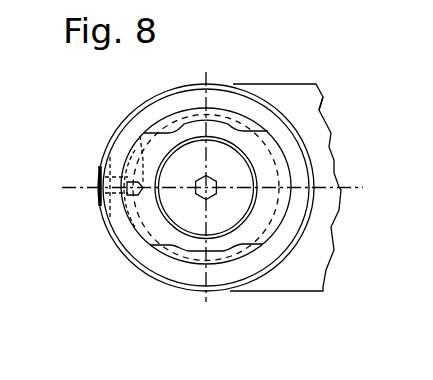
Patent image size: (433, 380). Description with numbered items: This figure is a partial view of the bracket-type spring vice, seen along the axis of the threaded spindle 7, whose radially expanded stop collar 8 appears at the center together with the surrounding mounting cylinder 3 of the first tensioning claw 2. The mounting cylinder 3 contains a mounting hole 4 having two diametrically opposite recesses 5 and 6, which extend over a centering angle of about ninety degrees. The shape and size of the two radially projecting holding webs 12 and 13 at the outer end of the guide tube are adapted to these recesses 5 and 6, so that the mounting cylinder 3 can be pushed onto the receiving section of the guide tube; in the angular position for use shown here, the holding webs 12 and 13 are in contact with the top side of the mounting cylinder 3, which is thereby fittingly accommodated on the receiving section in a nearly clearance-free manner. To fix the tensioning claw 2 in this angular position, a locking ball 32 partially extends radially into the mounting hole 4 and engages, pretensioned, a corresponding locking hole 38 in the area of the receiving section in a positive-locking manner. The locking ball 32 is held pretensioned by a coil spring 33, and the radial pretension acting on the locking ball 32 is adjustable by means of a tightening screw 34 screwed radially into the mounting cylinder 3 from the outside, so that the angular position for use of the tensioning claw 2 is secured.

The first tensioning claw 2 is at (276, 96).
The mounting cylinder 3 is at (122, 257).
The mounting hole 4 is at (296, 182).
The recess 5 is at (238, 110).
The recess 6 is at (188, 268).
The threaded spindle 7 is at (240, 207).
The stop collar 8 is at (246, 267).
The holding web 12 is at (284, 158).
The holding web 13 is at (127, 167).
The locking ball 32 is at (110, 212).
The coil spring 33 is at (103, 168).
The tightening screw 34 is at (98, 188).
The locking hole 38 is at (140, 133).